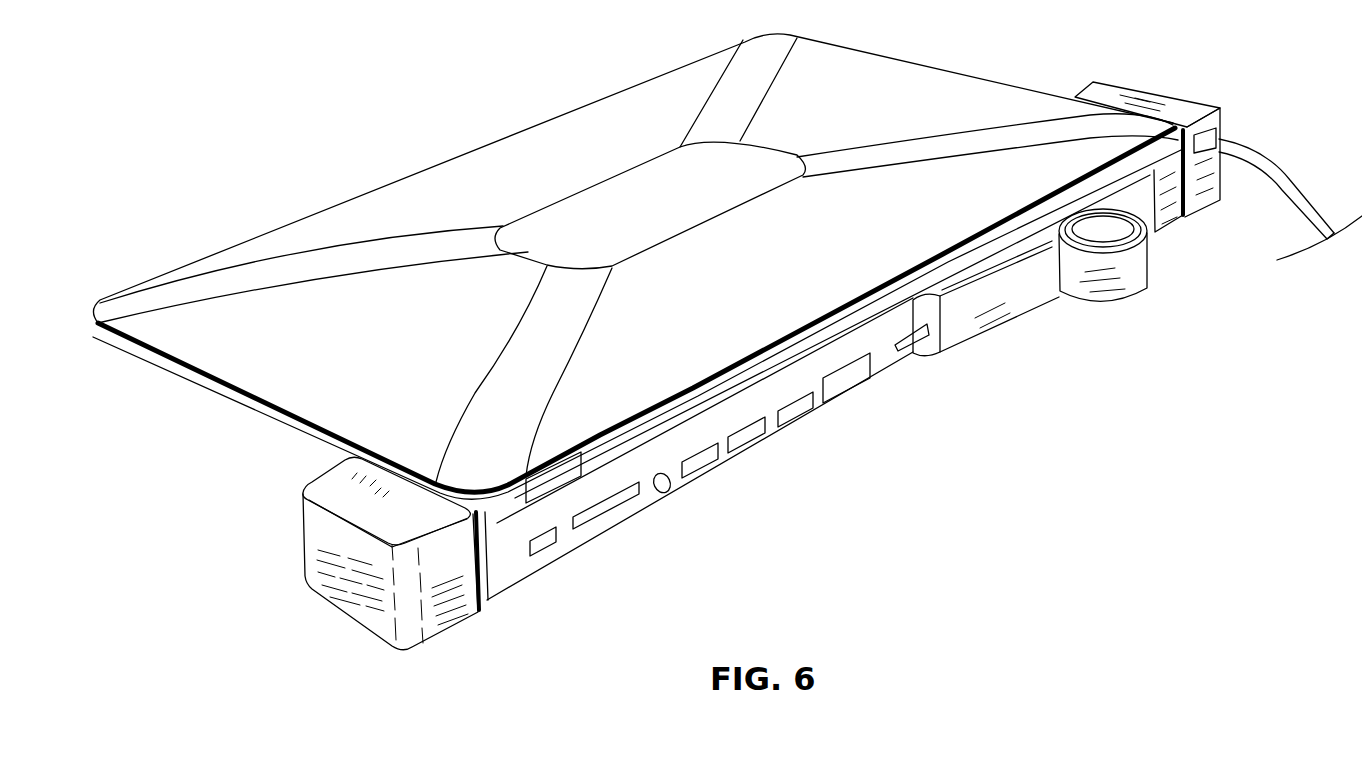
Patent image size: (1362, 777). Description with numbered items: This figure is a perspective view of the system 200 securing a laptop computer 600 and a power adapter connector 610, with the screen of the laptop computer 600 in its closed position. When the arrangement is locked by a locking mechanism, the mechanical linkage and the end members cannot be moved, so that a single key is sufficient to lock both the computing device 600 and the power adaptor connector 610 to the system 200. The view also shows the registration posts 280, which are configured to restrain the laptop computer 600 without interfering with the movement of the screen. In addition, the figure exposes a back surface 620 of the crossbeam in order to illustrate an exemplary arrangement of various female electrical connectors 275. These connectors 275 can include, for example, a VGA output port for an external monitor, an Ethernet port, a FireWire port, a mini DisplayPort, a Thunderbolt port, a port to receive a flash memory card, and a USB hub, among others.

The system 200 is at (1222, 98).
The laptop computer 600 is at (452, 158).
The power adapter connector 610 is at (1222, 110).
The back surface 620 is at (873, 357).
The female electrical connectors 275 is at (757, 434).
The registration posts 280 is at (481, 523).